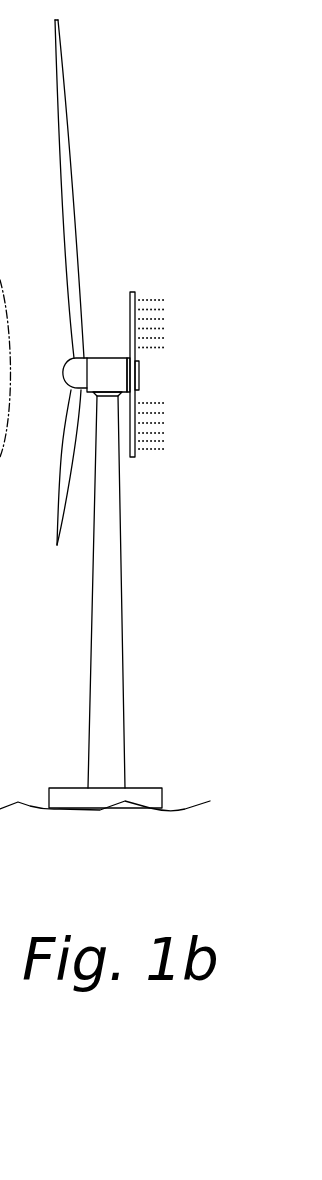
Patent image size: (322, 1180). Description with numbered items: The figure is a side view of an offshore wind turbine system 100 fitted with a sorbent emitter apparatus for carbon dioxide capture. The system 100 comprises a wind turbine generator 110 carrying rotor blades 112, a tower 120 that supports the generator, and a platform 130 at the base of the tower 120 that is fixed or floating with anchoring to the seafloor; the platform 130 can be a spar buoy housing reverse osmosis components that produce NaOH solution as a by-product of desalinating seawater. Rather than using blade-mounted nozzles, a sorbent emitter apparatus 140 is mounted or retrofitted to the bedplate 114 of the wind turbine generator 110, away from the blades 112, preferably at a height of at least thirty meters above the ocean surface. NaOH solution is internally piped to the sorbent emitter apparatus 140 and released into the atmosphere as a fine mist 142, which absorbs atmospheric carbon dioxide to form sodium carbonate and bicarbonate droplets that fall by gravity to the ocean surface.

The offshore wind turbine system 100 is at (146, 163).
The wind turbine generator 110 is at (97, 358).
The rotor blades 112 is at (60, 72).
The bedplate 114 is at (138, 362).
The tower 120 is at (112, 636).
The platform 130 is at (143, 794).
The sorbent emitter apparatus 140 is at (135, 292).
The fine mist 142 is at (177, 334).